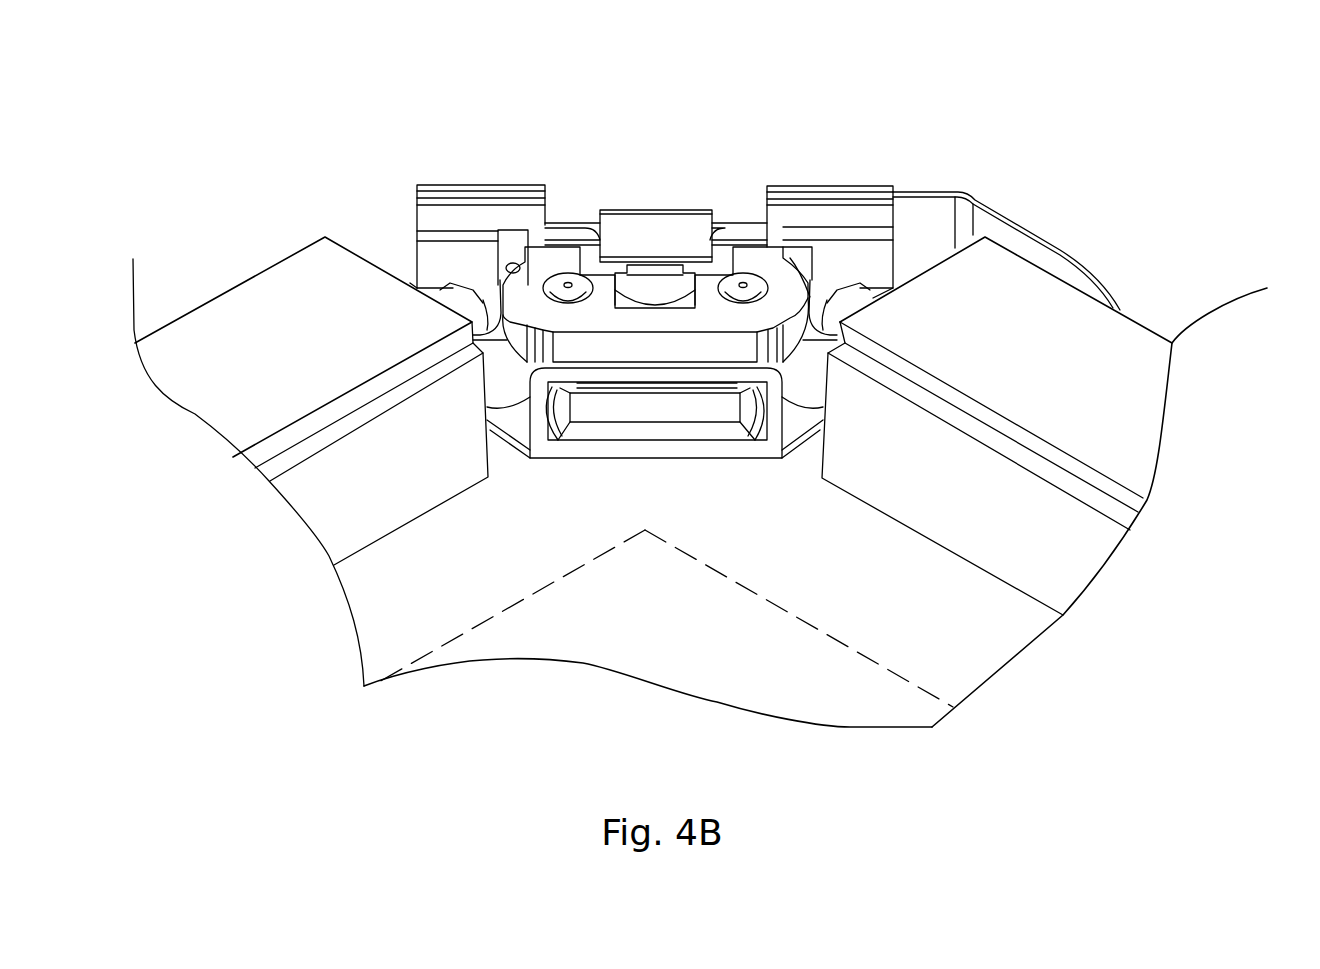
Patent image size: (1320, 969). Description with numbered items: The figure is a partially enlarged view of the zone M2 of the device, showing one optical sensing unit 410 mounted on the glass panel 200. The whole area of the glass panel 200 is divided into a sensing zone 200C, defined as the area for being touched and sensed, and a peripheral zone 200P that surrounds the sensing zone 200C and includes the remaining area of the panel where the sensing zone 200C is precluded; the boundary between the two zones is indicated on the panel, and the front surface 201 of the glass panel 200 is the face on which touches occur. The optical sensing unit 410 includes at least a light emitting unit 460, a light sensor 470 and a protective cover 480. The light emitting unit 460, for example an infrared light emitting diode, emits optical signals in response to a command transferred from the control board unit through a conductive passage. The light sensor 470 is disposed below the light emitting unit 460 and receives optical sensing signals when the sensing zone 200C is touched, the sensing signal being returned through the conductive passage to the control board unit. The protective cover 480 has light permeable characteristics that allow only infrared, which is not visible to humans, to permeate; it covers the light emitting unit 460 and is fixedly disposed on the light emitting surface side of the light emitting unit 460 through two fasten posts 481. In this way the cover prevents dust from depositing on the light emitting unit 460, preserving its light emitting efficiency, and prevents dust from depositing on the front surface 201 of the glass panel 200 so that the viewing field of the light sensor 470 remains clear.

The zone M2 is at (172, 55).
The glass panel 200 is at (483, 664).
The sensing zone 200C is at (628, 657).
The peripheral zone 200P is at (990, 645).
The front surface 201 is at (800, 698).
The optical sensing unit 410 is at (642, 188).
The light emitting unit 460 is at (665, 282).
The light sensor 470 is at (650, 385).
The protective cover 480 is at (787, 285).
The fasten posts 481 is at (742, 284).